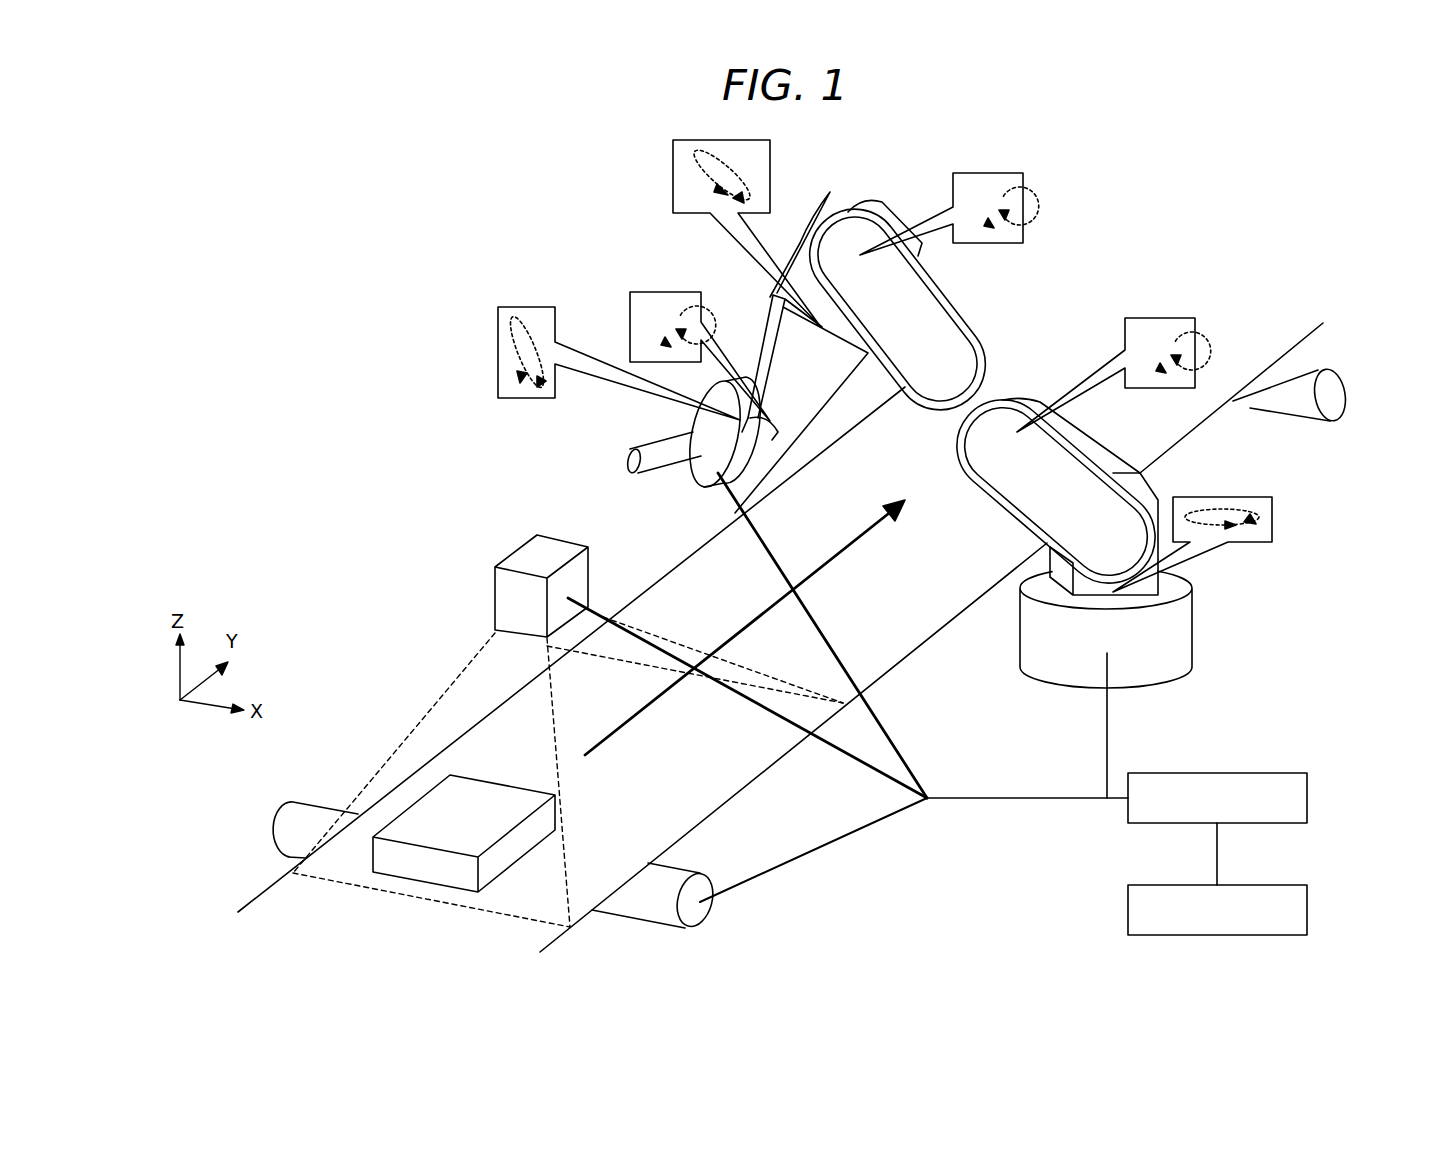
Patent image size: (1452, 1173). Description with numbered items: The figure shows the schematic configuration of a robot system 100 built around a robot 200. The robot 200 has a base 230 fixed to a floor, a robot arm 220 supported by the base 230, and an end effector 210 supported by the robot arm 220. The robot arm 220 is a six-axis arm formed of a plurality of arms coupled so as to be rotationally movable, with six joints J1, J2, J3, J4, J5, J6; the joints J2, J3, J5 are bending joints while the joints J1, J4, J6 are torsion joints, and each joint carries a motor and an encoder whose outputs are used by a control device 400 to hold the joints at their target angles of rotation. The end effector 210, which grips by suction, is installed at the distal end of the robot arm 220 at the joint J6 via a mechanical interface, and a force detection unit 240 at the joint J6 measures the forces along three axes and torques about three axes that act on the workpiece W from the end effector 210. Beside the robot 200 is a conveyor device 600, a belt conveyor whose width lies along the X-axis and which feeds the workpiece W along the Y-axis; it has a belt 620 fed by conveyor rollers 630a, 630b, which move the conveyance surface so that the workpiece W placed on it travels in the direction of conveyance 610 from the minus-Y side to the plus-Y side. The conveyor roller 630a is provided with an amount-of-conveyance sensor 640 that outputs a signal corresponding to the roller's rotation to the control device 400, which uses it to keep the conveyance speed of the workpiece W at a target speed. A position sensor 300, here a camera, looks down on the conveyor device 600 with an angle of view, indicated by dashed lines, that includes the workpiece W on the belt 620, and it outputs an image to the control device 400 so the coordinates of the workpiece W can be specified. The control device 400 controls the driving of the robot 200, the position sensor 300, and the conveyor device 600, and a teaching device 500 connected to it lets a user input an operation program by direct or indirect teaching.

The robot system 100 is at (383, 228).
The robot 200 is at (895, 457).
The end effector 210 is at (660, 457).
The robot arm 220 is at (833, 192).
The base 230 is at (1177, 633).
The force detection unit 240 is at (737, 473).
The position sensor 300 is at (532, 554).
The control device 400 is at (1308, 802).
The teaching device 500 is at (1308, 914).
The conveyor device 600 is at (784, 655).
The direction of conveyance 610 is at (847, 550).
The belt 620 is at (515, 726).
The conveyor roller 630a is at (710, 880).
The conveyor roller 630b is at (1350, 380).
The amount-of-conveyance sensor 640 is at (660, 897).
The workpiece W is at (422, 868).
The joint J1 is at (1203, 533).
The joint J2 is at (1131, 364).
The joint J3 is at (965, 203).
The joint J4 is at (746, 221).
The joint J5 is at (700, 343).
The joint J6 is at (619, 351).